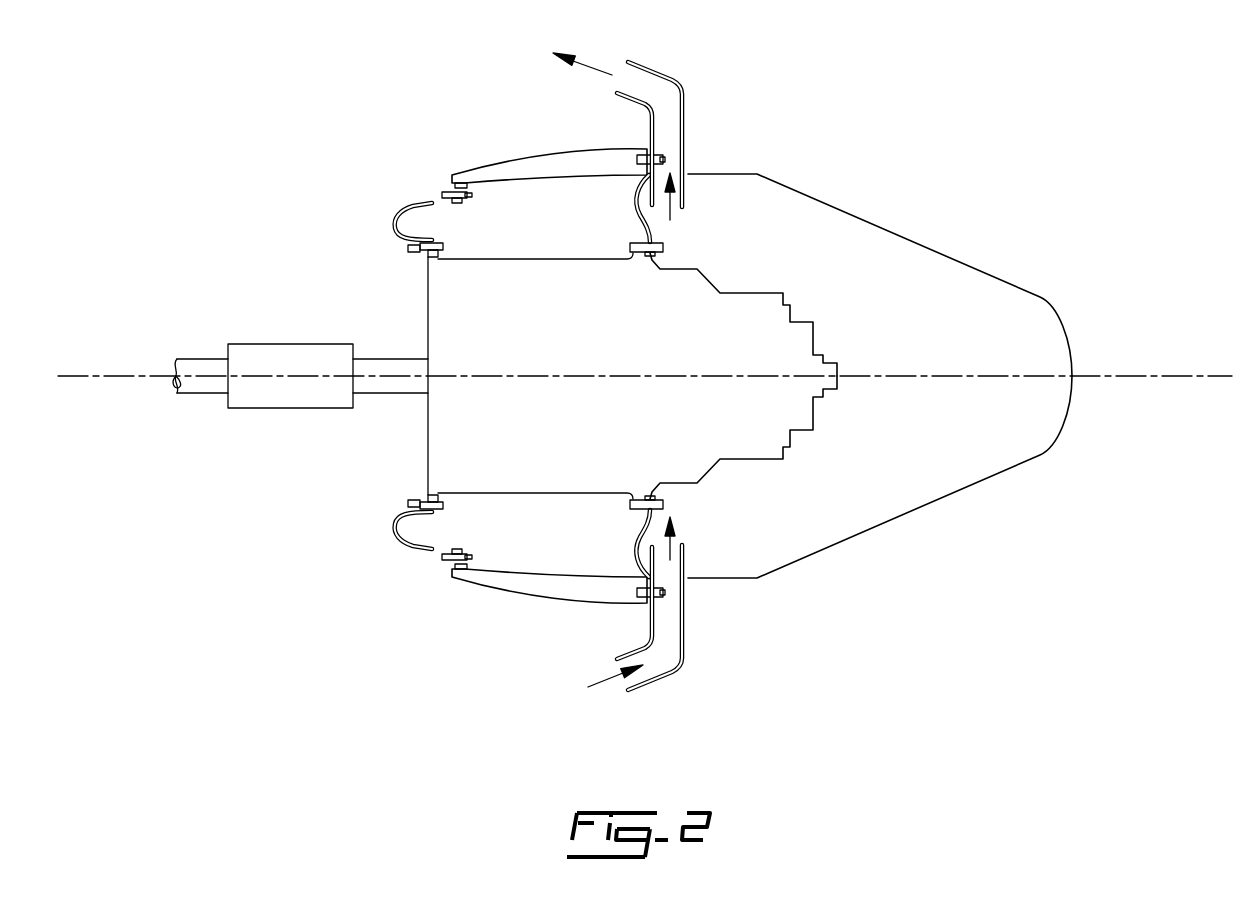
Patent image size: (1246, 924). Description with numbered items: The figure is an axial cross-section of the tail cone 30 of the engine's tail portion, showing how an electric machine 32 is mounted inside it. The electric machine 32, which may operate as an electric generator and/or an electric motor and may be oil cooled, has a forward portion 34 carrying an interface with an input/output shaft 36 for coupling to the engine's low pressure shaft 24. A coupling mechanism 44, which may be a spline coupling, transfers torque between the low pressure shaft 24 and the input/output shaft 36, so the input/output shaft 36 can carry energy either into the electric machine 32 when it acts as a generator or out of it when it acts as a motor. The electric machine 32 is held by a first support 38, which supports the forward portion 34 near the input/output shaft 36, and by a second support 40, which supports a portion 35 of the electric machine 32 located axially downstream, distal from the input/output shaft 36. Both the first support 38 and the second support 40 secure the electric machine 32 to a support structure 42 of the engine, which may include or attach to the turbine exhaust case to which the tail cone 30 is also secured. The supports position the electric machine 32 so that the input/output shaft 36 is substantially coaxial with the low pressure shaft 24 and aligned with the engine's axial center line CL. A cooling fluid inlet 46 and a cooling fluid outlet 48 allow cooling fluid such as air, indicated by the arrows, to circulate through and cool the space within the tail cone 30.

The low pressure shaft 24 is at (197, 358).
The tail cone 30 is at (900, 232).
The electric machine 32 is at (610, 355).
The forward portion 34 is at (325, 486).
The portion distal from input/output shaft 35 is at (779, 520).
The input/output shaft 36 is at (392, 358).
The first support 38 is at (397, 222).
The second support 40 is at (637, 206).
The support structure 42 is at (507, 158).
The coupling mechanism 44 is at (307, 373).
The cooling fluid inlet 46 is at (668, 613).
The cooling fluid outlet 48 is at (670, 158).
The axial center line CL is at (1131, 378).